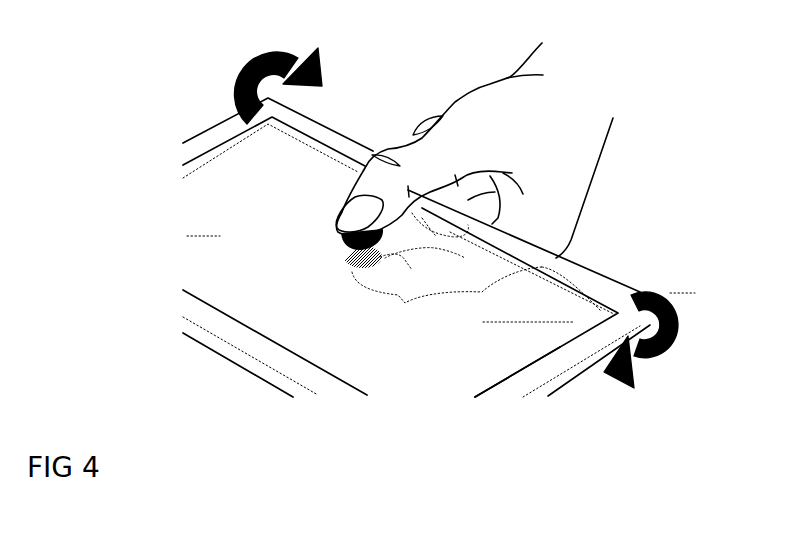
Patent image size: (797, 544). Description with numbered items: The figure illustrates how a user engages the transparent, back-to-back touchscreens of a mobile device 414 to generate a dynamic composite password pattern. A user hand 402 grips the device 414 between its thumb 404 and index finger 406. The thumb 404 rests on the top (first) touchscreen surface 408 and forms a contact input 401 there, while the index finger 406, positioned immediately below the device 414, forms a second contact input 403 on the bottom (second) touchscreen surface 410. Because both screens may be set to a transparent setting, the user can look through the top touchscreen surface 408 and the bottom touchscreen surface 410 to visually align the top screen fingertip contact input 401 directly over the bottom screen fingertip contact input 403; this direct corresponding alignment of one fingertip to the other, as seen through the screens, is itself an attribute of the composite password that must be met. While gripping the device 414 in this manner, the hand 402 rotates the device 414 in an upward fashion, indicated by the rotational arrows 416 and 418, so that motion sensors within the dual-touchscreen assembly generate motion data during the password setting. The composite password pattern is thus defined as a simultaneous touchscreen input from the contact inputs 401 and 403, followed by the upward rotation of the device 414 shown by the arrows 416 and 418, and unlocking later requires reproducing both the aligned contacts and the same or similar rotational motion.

The contact input 401 is at (341, 240).
The user hand 402 is at (570, 153).
The contact input 403 is at (344, 261).
The thumb 404 is at (352, 215).
The index finger 406 is at (405, 302).
The top (first) touchscreen surface 408 is at (567, 268).
The bottom (second) touchscreen surface 410 is at (609, 335).
The mobile device 414 is at (508, 388).
The rotational arrow 416 is at (244, 61).
The rotational arrow 418 is at (638, 372).